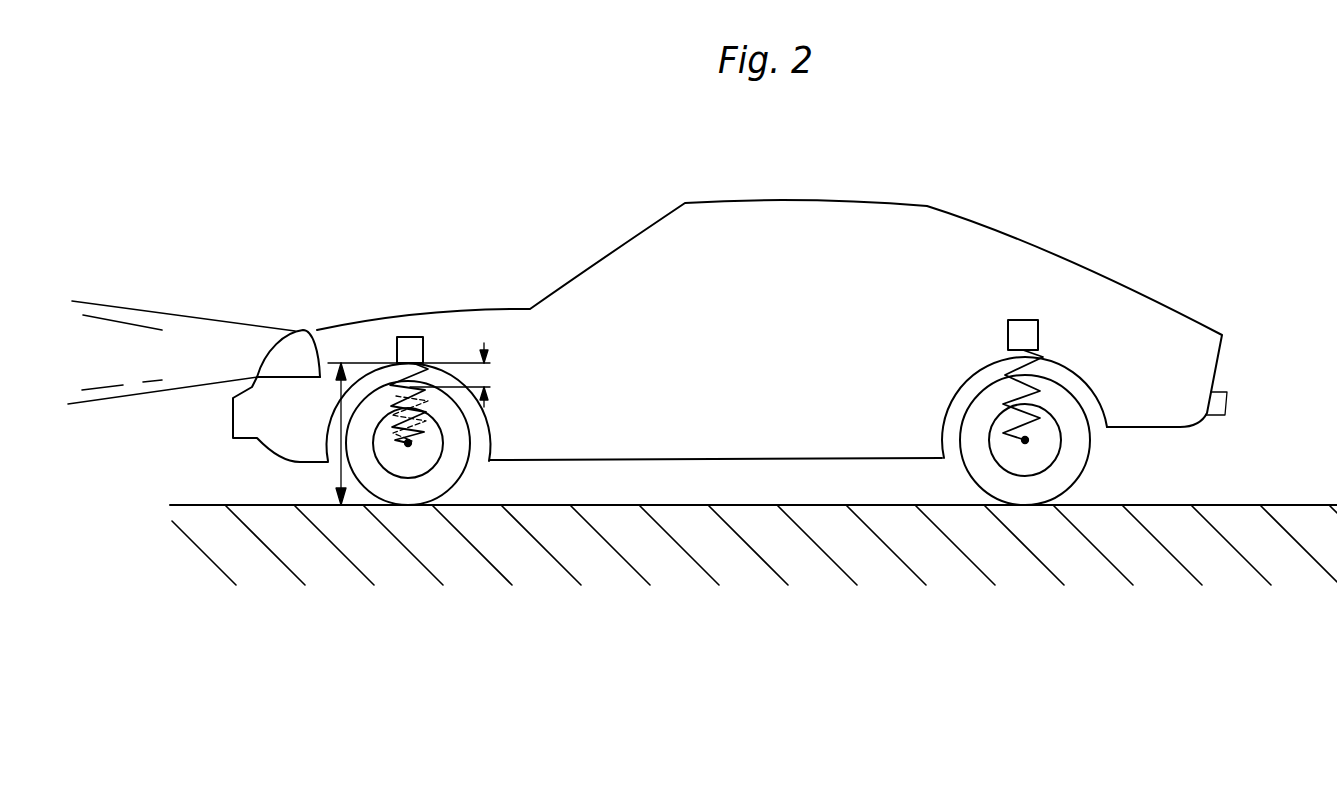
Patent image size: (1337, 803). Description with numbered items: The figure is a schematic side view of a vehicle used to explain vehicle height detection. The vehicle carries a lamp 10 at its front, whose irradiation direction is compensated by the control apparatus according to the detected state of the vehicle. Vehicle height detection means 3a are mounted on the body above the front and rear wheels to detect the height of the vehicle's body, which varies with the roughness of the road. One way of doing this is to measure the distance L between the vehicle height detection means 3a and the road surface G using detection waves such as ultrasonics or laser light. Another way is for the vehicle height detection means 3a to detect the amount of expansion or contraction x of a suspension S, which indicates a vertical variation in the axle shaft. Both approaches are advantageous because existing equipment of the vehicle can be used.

The lamp 10 is at (292, 350).
The vehicle height detection means 3a is at (407, 343).
The suspension S is at (430, 421).
The amount of expansion or contraction x is at (483, 376).
The distance L is at (340, 394).
The road surface G is at (753, 545).